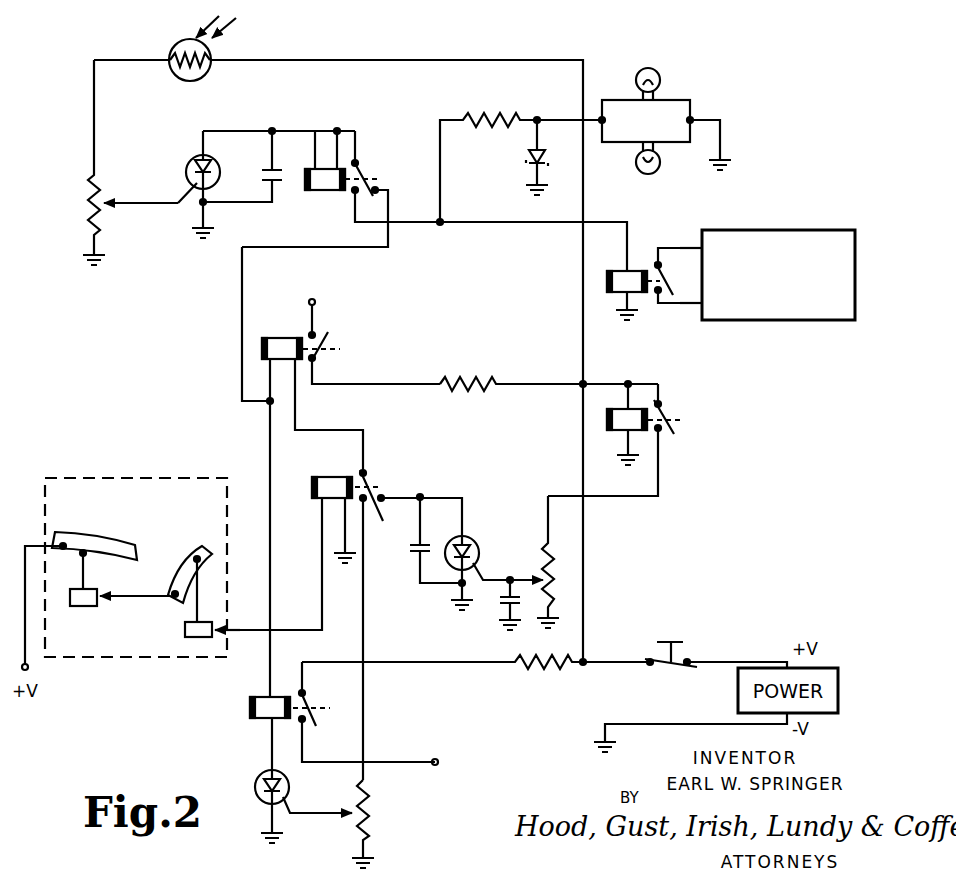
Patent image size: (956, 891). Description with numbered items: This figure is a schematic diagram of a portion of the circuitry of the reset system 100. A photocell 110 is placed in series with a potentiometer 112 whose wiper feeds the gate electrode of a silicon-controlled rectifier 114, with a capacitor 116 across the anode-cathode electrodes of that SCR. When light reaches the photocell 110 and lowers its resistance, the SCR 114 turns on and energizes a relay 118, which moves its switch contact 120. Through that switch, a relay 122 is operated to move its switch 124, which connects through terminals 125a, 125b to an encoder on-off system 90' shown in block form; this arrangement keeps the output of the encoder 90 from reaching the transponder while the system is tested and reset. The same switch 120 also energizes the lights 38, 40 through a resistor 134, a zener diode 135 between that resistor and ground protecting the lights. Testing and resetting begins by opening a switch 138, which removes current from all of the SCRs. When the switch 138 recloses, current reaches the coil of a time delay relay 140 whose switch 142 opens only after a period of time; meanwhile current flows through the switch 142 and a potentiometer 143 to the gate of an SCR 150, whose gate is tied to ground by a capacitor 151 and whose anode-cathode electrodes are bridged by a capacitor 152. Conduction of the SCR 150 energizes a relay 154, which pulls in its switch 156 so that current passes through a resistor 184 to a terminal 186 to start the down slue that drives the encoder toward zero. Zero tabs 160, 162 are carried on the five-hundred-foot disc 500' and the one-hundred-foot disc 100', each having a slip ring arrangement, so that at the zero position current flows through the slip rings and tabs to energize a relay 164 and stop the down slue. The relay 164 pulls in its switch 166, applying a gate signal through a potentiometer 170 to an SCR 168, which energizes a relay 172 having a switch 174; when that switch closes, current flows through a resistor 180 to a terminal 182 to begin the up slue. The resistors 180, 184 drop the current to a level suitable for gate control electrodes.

The system 100 is at (338, 334).
The photocell 110 is at (177, 40).
The potentiometer 112 is at (86, 224).
The silicon-controlled rectifier 114 is at (189, 171).
The capacitor 116 is at (268, 169).
The relay 118 is at (348, 192).
The switch contact 120 is at (434, 189).
The relay 122 is at (606, 278).
The switch 124 is at (675, 275).
The terminal 125a is at (690, 246).
The terminal 125b is at (700, 306).
The resistor 134 is at (491, 116).
The zener diode 135 is at (528, 164).
The switch 138 is at (688, 640).
The relay 140 is at (614, 432).
The switch 142 is at (666, 411).
The potentiometer 143 is at (540, 559).
The SCR 150 is at (471, 540).
The capacitor 151 is at (503, 606).
The capacitor 152 is at (413, 550).
The relay 154 is at (278, 337).
The switch 156 is at (332, 336).
The zero tab 160 is at (87, 606).
The zero tab 162 is at (183, 629).
The relay 164 is at (328, 478).
The switch 166 is at (384, 625).
The SCR 168 is at (289, 788).
The potentiometer 170 is at (373, 793).
The relay 172 is at (262, 718).
The switch 174 is at (312, 708).
The resistor 180 is at (535, 667).
The terminal 182 is at (438, 766).
The resistor 184 is at (476, 382).
The terminal 186 is at (316, 301).
The light 38 is at (659, 72).
The light 40 is at (659, 172).
The encoder 90 is at (136, 545).
The encoder on-off system 90' is at (778, 256).
The 100 foot disc 100' is at (190, 573).
The 500 foot disc 500' is at (94, 548).